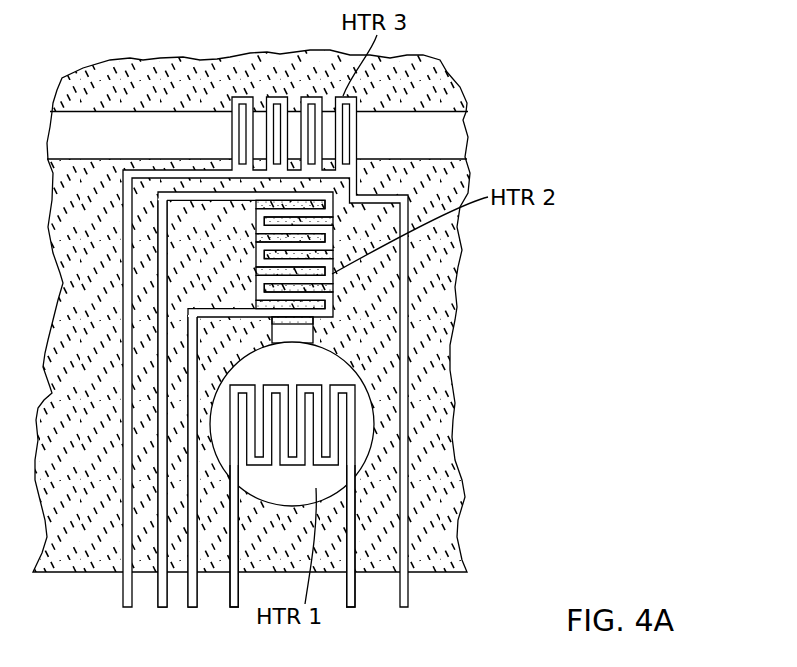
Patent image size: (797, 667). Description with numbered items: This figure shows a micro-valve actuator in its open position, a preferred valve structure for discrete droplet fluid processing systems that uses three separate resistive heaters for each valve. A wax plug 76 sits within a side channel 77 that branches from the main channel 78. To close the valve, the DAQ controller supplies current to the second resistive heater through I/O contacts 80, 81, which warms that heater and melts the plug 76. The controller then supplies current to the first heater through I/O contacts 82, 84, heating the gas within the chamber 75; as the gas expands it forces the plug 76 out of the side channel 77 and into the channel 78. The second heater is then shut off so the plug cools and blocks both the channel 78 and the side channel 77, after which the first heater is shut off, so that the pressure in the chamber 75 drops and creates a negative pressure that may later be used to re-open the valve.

The chamber 75 is at (372, 393).
The wax plug 76 is at (292, 332).
The side channel 77 is at (304, 335).
The channel 78 is at (457, 132).
The I/O contact 80 is at (163, 607).
The I/O contact 81 is at (193, 607).
The I/O contact 82 is at (232, 607).
The I/O contact 84 is at (347, 607).